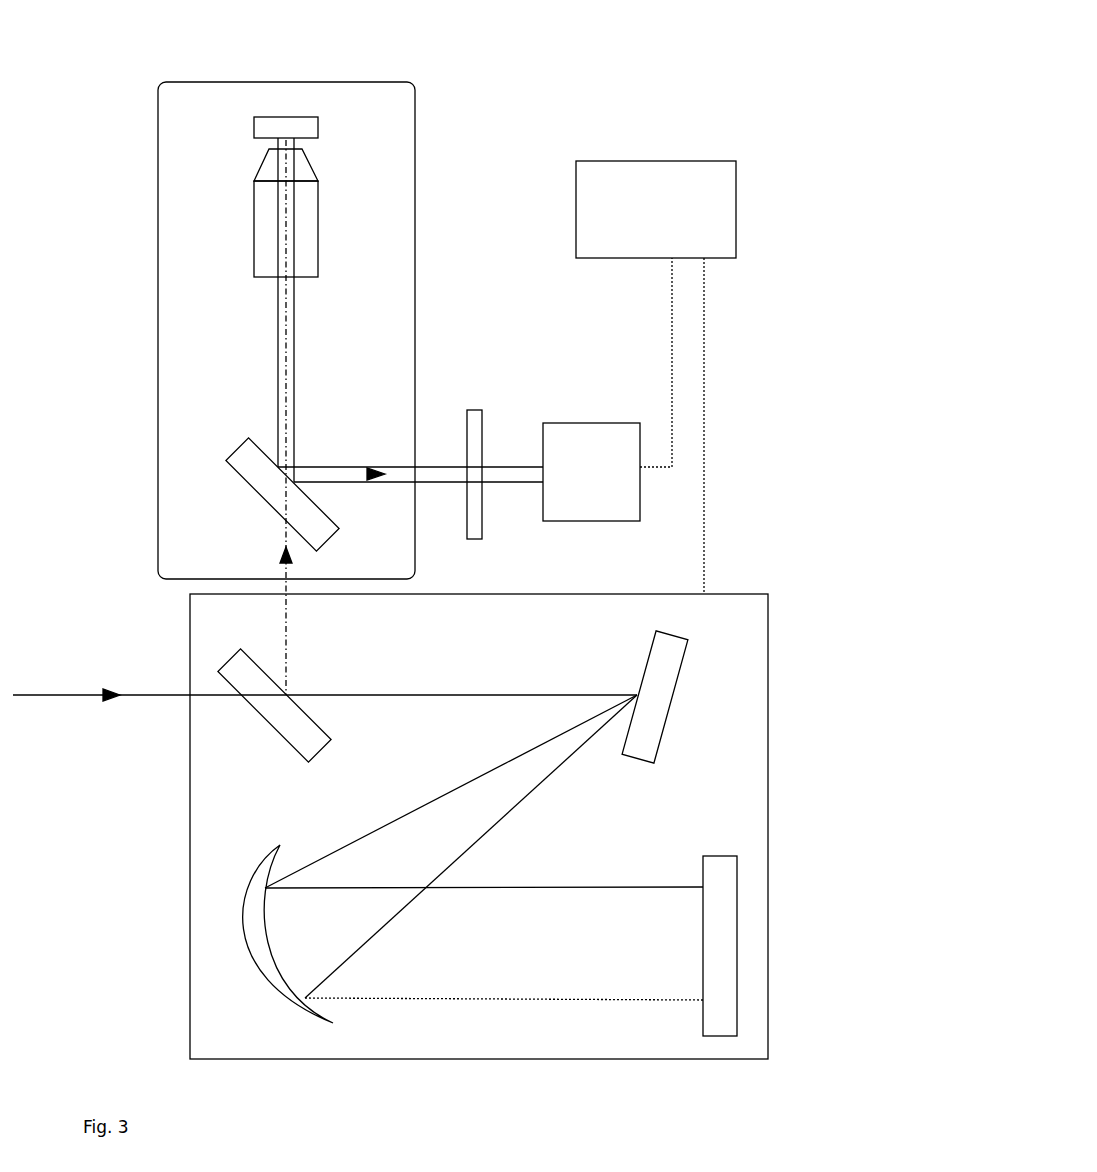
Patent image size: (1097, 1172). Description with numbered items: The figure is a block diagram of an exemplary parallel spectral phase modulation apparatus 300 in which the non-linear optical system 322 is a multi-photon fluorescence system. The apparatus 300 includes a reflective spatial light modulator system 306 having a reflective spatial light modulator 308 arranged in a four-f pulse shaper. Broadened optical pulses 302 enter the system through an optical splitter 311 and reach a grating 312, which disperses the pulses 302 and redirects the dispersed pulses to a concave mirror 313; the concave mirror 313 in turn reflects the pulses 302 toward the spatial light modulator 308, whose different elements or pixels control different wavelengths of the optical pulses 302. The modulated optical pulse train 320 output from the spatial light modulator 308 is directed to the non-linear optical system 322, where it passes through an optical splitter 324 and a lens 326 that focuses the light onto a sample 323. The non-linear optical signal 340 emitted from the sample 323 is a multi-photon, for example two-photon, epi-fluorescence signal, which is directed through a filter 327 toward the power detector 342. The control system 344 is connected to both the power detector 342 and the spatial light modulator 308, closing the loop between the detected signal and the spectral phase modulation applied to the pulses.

The parallel spectral phase modulation apparatus 300 is at (702, 41).
The broadened optical pulses 302 is at (78, 696).
The reflective spatial light modulator system 306 is at (768, 643).
The reflective spatial light modulator 308 is at (722, 855).
The optical splitter 311 is at (285, 739).
The grating 312 is at (673, 688).
The concave mirror 313 is at (255, 963).
The modulated optical pulse train 320 is at (286, 625).
The non-linear optical system 322 is at (416, 137).
The sample 323 is at (254, 125).
The optical splitter 324 is at (238, 448).
The lens 326 is at (254, 207).
The filter 327 is at (475, 410).
The non-linear optical signal 340 is at (333, 467).
The power detector 342 is at (591, 472).
The control system 344 is at (656, 377).